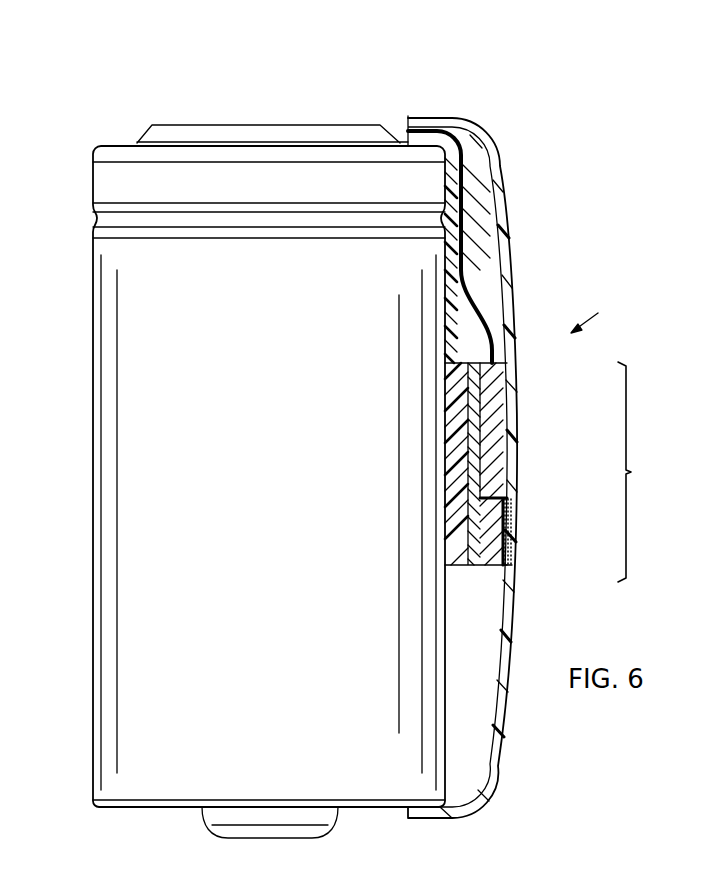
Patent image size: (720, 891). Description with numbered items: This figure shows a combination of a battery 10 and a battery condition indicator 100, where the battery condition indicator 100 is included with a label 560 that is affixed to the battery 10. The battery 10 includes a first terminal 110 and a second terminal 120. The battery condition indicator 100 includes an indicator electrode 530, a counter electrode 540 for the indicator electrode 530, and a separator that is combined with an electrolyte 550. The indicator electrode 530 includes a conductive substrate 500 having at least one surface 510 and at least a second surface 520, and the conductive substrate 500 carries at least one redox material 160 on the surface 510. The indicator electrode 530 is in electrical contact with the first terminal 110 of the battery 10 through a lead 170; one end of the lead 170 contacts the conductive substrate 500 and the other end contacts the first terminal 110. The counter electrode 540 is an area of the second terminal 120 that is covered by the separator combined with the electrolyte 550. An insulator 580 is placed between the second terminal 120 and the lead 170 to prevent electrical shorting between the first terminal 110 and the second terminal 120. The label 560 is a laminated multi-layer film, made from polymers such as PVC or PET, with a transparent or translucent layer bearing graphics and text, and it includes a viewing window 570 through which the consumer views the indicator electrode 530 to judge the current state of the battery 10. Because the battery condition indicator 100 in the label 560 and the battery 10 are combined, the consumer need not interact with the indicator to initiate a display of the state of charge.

The battery 10 is at (131, 62).
The first terminal 110 is at (270, 125).
The second terminal 120 is at (93, 522).
The lead 170 is at (462, 193).
The label 560 is at (513, 250).
The battery condition indicator 100 is at (605, 308).
The insulator 580 is at (450, 320).
The counter electrode 540 is at (457, 428).
The conductive substrate 500 is at (482, 393).
The surface 510 is at (490, 415).
The second surface 520 is at (505, 503).
The indicator electrode 530 is at (653, 472).
The viewing window 570 is at (510, 538).
The redox material 160 is at (510, 565).
The separator combined with an electrolyte 550 is at (458, 557).